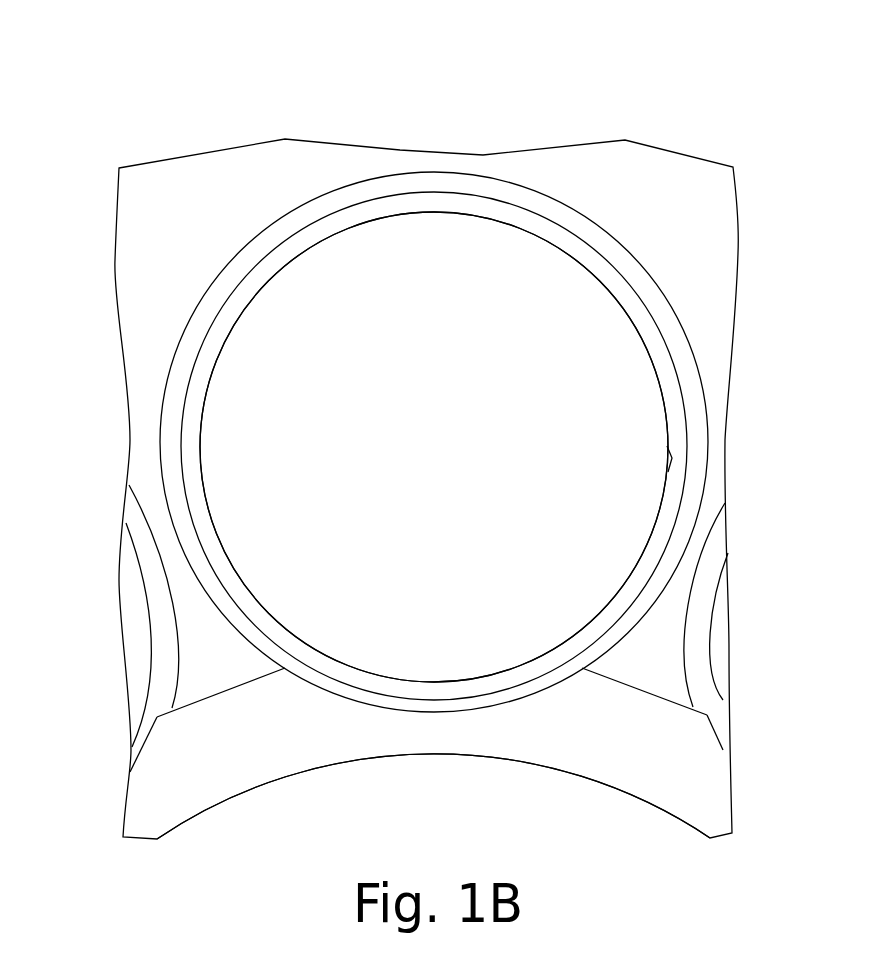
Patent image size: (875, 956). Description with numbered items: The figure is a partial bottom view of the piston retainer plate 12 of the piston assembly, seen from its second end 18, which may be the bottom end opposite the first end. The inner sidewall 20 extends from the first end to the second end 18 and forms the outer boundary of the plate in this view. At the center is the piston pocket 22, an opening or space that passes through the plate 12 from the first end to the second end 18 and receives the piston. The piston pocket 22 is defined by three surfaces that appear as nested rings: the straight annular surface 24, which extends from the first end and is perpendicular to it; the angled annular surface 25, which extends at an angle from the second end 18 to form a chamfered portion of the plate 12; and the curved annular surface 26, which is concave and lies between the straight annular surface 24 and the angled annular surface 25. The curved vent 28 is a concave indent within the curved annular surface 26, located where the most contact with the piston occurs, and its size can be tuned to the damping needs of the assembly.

The piston retainer plate 12 is at (112, 111).
The second end 18 is at (210, 203).
The inner sidewall 20 is at (406, 755).
The piston pocket 22 is at (437, 305).
The straight annular surface 24 is at (512, 667).
The angled annular surface 25 is at (688, 519).
The curved annular surface 26 is at (637, 575).
The curved vent 28 is at (672, 460).